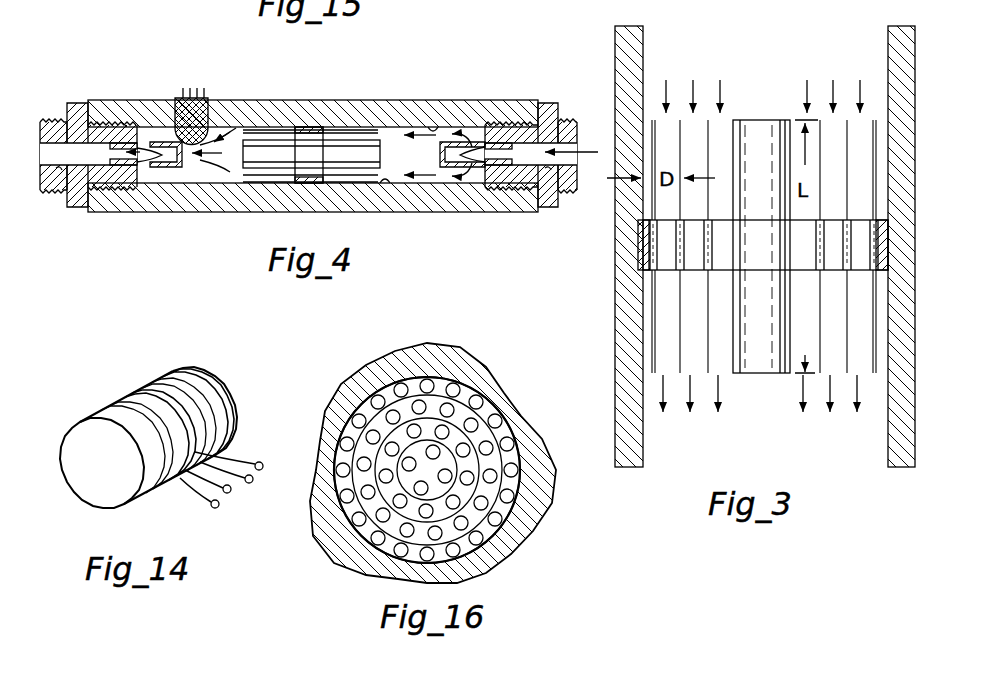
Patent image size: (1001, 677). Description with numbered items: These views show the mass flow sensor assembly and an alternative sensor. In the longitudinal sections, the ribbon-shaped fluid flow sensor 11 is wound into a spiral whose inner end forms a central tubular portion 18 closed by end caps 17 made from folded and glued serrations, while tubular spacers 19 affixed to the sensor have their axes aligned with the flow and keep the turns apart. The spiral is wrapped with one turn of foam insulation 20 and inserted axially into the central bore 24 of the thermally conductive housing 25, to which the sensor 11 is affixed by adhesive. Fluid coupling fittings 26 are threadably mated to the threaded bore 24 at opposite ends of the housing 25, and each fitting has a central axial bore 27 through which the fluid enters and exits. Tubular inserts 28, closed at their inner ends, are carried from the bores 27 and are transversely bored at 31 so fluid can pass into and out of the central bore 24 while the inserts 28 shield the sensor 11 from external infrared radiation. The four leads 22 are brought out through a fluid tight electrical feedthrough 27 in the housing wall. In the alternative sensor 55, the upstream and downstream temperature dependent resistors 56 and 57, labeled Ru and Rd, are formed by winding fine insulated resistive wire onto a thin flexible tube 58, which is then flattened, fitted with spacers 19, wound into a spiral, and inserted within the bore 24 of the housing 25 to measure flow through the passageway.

In FIG. 4, the fluid flow sensor 11 is at (384, 150).
In FIG. 3, the fluid flow sensor 11 is at (745, 85).
In FIG. 3, the end caps 17 is at (766, 112).
In FIG. 3, the central tubular portion 18 is at (765, 262).
In FIG. 3, the tubular spacers 19 is at (855, 228).
In FIG. 16, the tubular spacers 19 is at (344, 474).
In FIG. 4, the foam insulation 20 is at (302, 126).
In FIG. 3, the foam insulation 20 is at (890, 218).
In FIG. 4, the leads 22 is at (235, 127).
In FIG. 4, the central bore 24 is at (436, 127).
In FIG. 3, the central bore 24 is at (891, 62).
In FIG. 16, the central bore 24 is at (506, 506).
In FIG. 4, the housing 25 is at (262, 103).
In FIG. 3, the housing 25 is at (636, 64).
In FIG. 16, the housing 25 is at (436, 366).
In FIG. 4, the fluid coupling fittings 26 is at (56, 122).
In FIG. 4, the central axial bore 27 is at (170, 92).
In FIG. 4, the tubular inserts 28 is at (113, 166).
In FIG. 4, the transverse bores 31 is at (163, 170).
In FIG. 16, the alternative fluid flow sensor 55 is at (405, 418).
In FIG. 14, the upstream temperature dependent resistor 56 is at (131, 398).
In FIG. 14, the downstream temperature dependent resistor 57 is at (192, 374).
In FIG. 14, the thin flexible tube 58 is at (222, 402).
In FIG. 14, the upstream resistance band Ru is at (116, 406).
In FIG. 14, the downstream resistance band Rd is at (157, 386).